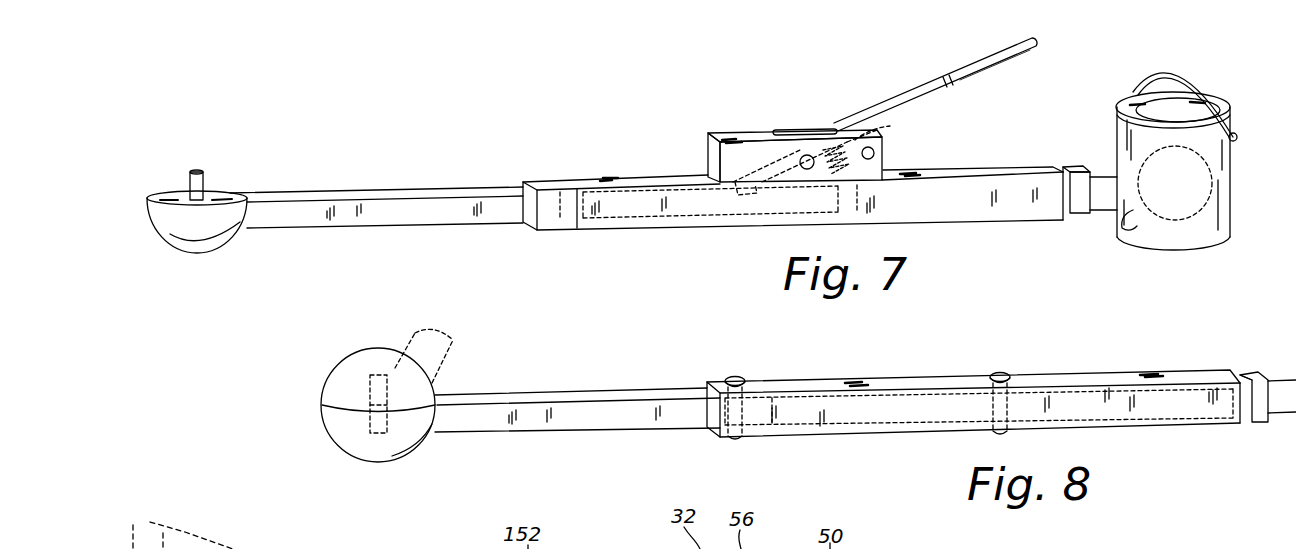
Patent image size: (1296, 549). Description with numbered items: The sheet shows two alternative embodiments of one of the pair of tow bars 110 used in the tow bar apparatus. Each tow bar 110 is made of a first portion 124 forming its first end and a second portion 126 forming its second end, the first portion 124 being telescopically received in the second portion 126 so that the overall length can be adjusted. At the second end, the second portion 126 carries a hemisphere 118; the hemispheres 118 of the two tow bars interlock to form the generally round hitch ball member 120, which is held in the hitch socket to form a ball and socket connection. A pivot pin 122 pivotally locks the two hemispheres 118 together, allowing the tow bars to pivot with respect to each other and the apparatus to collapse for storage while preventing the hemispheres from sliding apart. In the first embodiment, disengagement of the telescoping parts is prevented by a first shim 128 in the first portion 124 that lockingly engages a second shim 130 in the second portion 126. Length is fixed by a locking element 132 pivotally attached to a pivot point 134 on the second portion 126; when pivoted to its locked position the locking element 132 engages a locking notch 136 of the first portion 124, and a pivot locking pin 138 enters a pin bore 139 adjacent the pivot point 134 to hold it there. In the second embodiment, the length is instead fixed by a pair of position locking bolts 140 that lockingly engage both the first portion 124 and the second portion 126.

In FIG. 7, the tow bar 110 is at (567, 136).
In FIG. 8, the tow bar 110 is at (672, 364).
In FIG. 7, the hemisphere 118 is at (182, 242).
In FIG. 8, the hitch ball member 120 is at (303, 423).
In FIG. 7, the pivot pin 122 is at (190, 170).
In FIG. 8, the pivot pin 122 is at (367, 376).
In FIG. 7, the first portion 124 is at (1018, 213).
In FIG. 8, the first portion 124 is at (1080, 377).
In FIG. 7, the second portion 126 is at (386, 204).
In FIG. 8, the second portion 126 is at (531, 395).
In FIG. 7, the first shim 128 is at (550, 231).
In FIG. 7, the second shim 130 is at (580, 231).
In FIG. 7, the locking element 132 is at (908, 97).
In FIG. 7, the pivot point 134 is at (806, 155).
In FIG. 7, the locking notch 136 is at (742, 191).
In FIG. 7, the pivot locking pin 138 is at (874, 153).
In FIG. 7, the pin bore 139 is at (885, 131).
In FIG. 8, the position locking bolts 140 is at (992, 375).